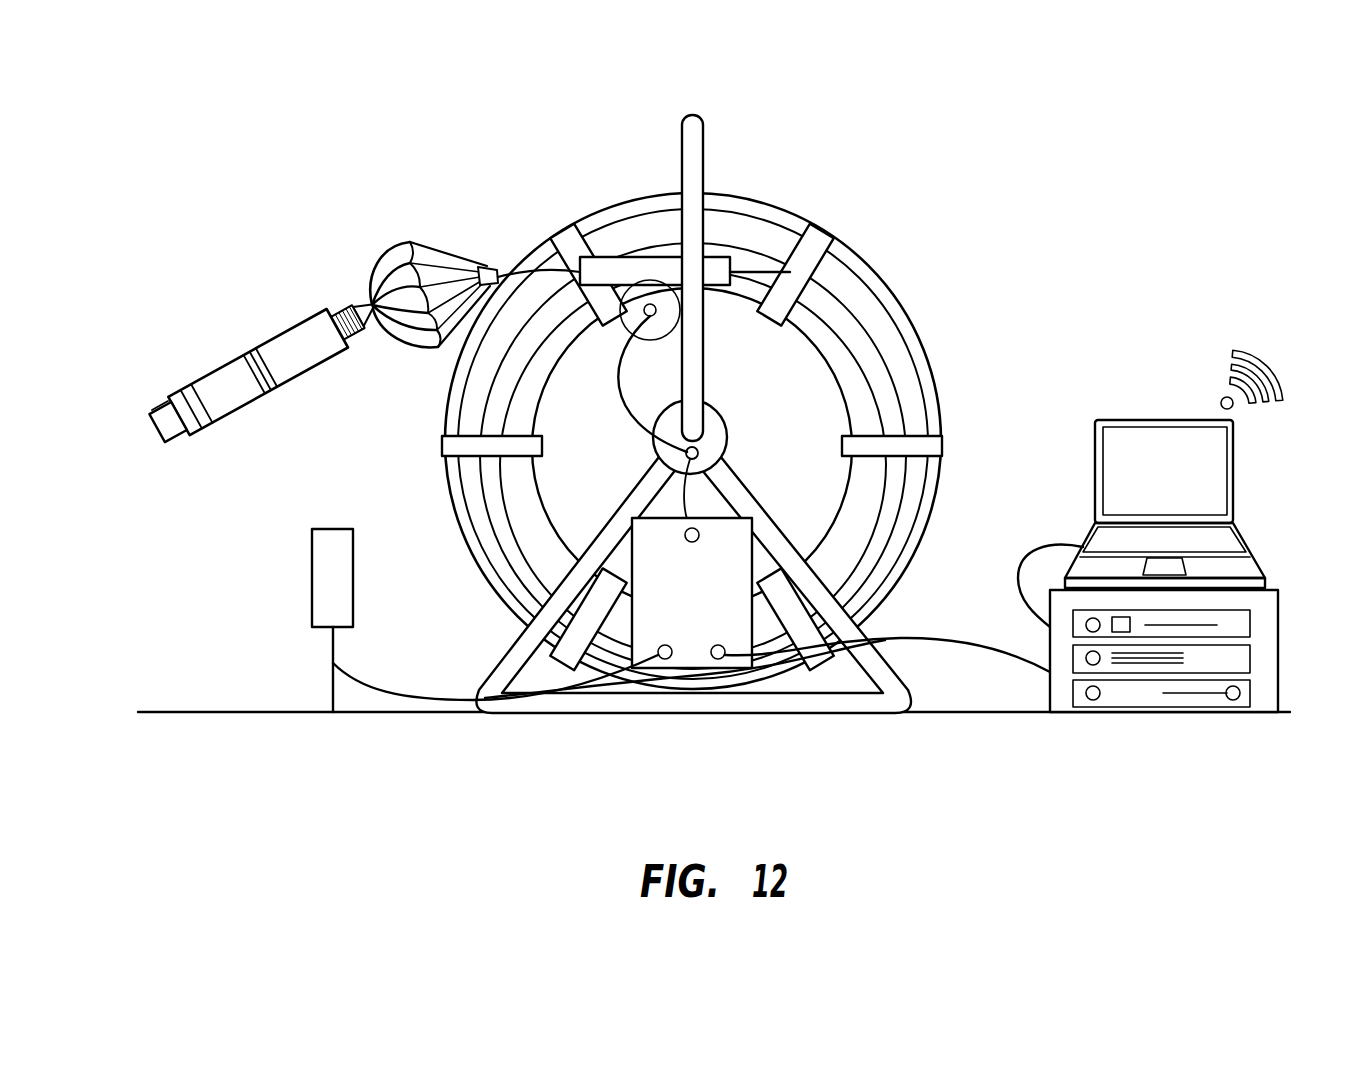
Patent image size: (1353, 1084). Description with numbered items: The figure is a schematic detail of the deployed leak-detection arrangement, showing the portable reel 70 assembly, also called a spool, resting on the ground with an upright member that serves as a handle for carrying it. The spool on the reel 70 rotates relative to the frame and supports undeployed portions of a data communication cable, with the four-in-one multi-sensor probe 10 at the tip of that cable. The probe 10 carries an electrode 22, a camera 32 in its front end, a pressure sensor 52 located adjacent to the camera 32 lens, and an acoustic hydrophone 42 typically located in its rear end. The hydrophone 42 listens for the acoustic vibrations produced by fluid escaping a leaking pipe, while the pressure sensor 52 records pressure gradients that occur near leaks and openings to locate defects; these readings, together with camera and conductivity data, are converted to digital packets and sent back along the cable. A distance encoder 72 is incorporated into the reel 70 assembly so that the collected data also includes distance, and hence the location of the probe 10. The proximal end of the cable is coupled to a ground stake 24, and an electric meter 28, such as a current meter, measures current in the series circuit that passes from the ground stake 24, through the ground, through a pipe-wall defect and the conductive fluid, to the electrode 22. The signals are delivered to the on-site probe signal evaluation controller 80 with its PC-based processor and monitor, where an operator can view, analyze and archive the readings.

The multi-sensor probe 10 is at (342, 351).
The electrode 22 is at (243, 355).
The ground stake 24 is at (318, 578).
The electric meter 28 is at (705, 604).
The camera 32 is at (178, 433).
The acoustic hydrophone 42 is at (333, 312).
The pressure sensor 52 is at (153, 408).
The portable reel assembly 70 is at (708, 414).
The distance encoder 72 is at (637, 267).
The on-site probe signal evaluation controller 80 is at (1137, 419).